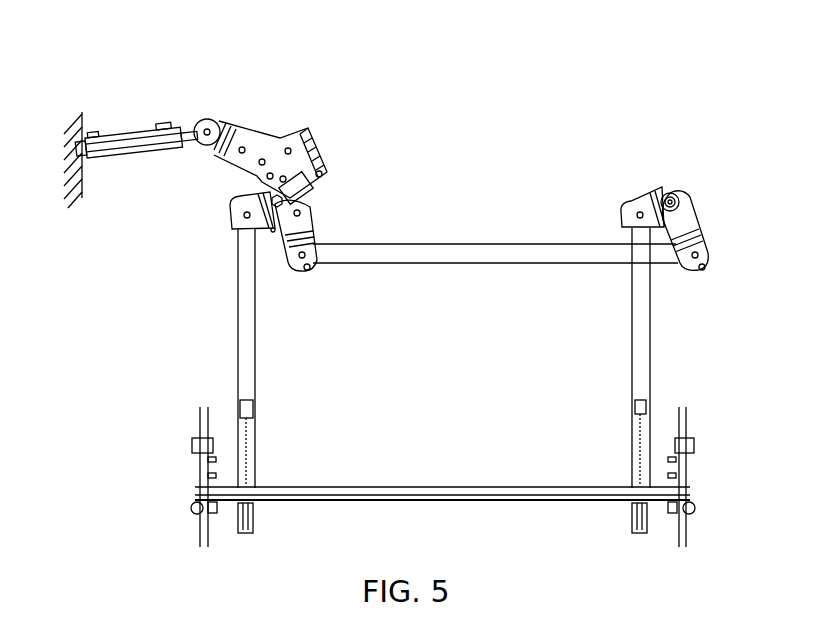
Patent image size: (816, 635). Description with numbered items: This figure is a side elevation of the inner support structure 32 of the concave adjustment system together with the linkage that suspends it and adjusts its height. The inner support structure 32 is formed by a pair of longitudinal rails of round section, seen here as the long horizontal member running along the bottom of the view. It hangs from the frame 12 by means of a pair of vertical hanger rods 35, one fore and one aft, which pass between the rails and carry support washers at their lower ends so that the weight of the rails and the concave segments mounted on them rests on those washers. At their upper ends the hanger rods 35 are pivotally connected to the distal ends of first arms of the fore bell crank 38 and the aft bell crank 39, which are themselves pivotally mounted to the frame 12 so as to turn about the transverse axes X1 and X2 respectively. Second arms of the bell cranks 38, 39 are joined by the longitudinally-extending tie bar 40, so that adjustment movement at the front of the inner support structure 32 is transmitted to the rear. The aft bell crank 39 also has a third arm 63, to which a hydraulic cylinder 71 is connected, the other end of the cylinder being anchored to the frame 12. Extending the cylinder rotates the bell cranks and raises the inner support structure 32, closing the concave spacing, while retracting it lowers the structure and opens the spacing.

The frame 12 is at (80, 172).
The actuator cylinder 71 is at (127, 137).
The third arm 63 is at (249, 148).
The aft bell crank 39 is at (307, 217).
The tie bar 40 is at (508, 252).
The hanger rods 35 is at (252, 336).
The fore bell crank 38 is at (684, 221).
The inner support structure 32 is at (545, 502).
The transverse axis X1 is at (672, 192).
The transverse axis X2 is at (272, 232).